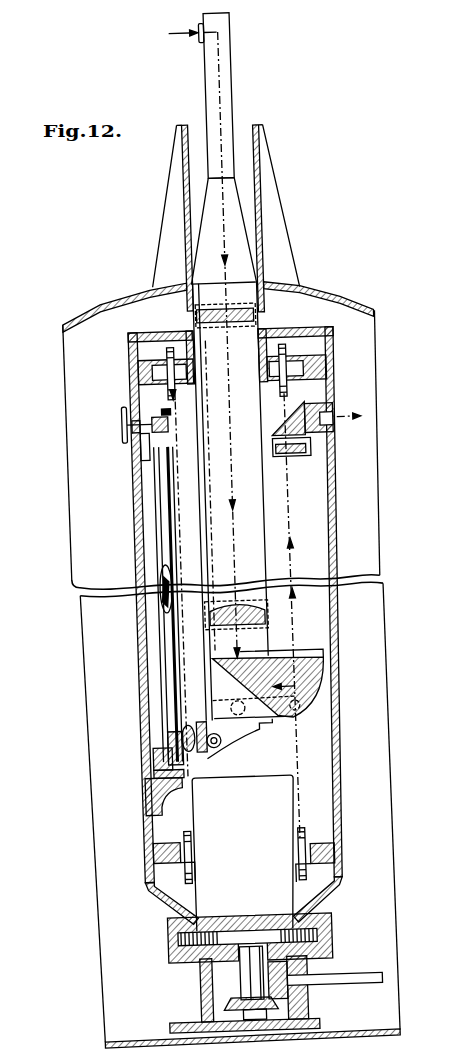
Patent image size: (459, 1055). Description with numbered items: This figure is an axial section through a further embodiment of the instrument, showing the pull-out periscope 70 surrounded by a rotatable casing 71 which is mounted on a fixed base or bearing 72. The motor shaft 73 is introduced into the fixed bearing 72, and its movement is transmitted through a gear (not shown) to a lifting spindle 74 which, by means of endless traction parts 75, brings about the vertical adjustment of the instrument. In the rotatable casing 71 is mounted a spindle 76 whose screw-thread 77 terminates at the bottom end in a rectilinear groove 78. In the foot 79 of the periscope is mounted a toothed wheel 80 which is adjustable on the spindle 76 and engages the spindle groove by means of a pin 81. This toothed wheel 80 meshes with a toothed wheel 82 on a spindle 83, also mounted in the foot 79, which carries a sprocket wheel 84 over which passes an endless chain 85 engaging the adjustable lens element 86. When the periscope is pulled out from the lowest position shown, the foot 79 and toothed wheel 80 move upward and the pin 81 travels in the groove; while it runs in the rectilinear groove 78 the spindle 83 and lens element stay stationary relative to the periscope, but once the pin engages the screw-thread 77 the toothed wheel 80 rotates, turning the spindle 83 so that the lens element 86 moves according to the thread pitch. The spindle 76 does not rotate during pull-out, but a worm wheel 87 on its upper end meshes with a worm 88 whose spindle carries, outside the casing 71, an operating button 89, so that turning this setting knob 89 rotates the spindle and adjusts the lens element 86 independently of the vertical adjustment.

The pull-out periscope 70 is at (229, 95).
The rotatable casing 71 is at (323, 558).
The fixed base or bearing 72 is at (188, 980).
The motor shaft 73 is at (338, 982).
The lifting spindle 74 is at (324, 849).
The endless traction parts 75 is at (167, 406).
The spindle 76 is at (157, 576).
The screw-thread 77 is at (156, 598).
The rectilinear groove 78 is at (164, 686).
The foot 79 is at (181, 769).
The toothed wheel 80 is at (147, 750).
The pin 81 is at (138, 770).
The toothed wheel 82 is at (172, 726).
The spindle 83 is at (197, 748).
The sprocket wheel 84 is at (205, 743).
The endless chain 85 is at (193, 549).
The adjustable lens element 86 is at (217, 612).
The worm wheel 87 is at (168, 411).
The worm 88 is at (165, 429).
The operating button 89 is at (121, 436).